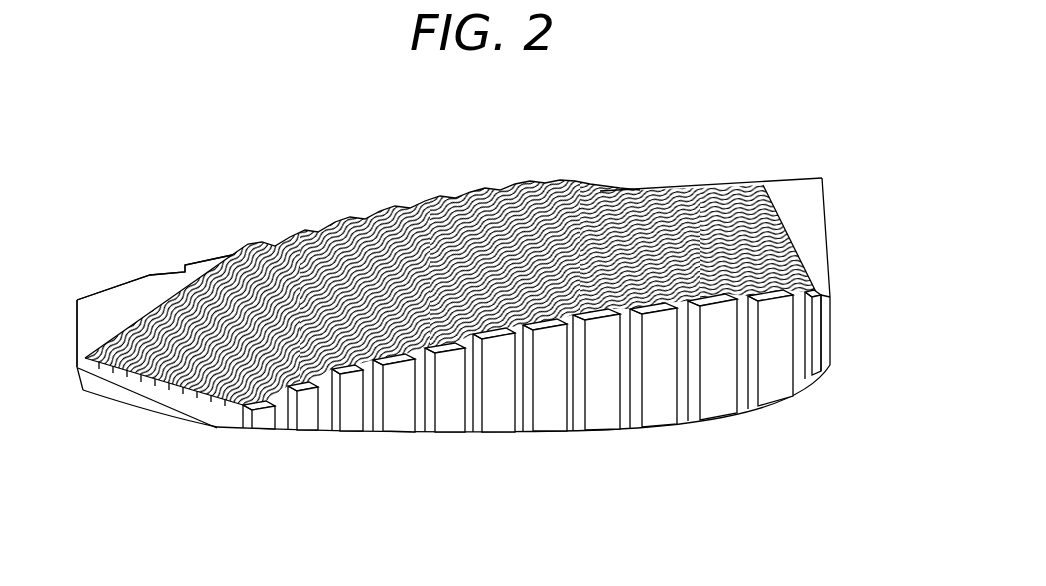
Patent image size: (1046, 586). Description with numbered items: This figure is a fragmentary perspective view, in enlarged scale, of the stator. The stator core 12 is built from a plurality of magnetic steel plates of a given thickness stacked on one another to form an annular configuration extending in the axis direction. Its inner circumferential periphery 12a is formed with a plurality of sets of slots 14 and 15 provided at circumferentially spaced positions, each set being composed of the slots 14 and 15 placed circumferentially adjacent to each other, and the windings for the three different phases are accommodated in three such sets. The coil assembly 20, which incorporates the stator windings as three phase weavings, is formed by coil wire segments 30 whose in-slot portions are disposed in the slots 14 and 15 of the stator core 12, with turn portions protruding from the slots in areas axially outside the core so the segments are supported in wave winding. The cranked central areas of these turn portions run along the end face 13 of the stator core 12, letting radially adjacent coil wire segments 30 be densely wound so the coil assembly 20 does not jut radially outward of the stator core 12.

The stator core 12 is at (172, 272).
The inner circumferential periphery 12a is at (825, 350).
The end face 13 is at (113, 303).
The slot 14 is at (243, 430).
The slot 15 is at (287, 428).
The coil assembly 20 is at (452, 243).
The coil wire segment 30 is at (227, 267).